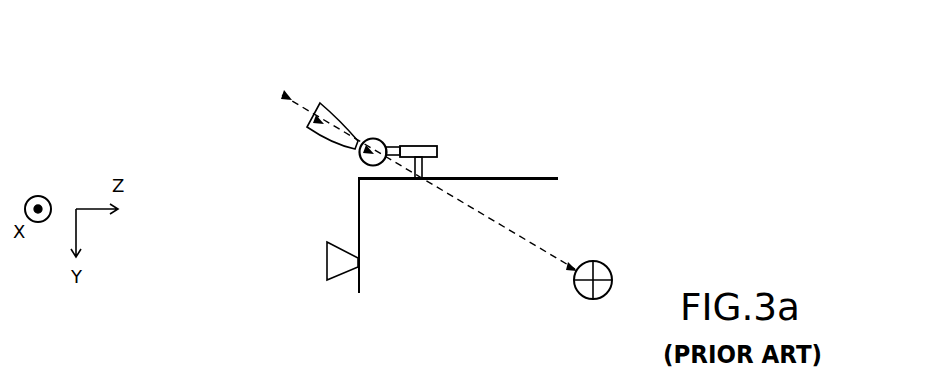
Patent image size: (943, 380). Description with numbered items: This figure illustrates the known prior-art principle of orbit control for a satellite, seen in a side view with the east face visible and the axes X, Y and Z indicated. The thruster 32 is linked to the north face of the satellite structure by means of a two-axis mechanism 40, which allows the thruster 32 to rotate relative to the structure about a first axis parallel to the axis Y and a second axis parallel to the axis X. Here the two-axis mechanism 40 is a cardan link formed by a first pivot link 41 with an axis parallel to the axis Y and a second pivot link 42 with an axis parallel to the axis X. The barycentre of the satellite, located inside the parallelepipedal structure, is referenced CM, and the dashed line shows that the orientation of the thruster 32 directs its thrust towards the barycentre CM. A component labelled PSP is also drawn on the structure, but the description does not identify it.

The thruster 32 is at (320, 103).
The two-axis mechanism 40 is at (410, 114).
The first pivot link 41 is at (417, 143).
The second pivot link 42 is at (370, 137).
The propulsion thruster PSP is at (325, 262).
The barycentre CM is at (608, 267).